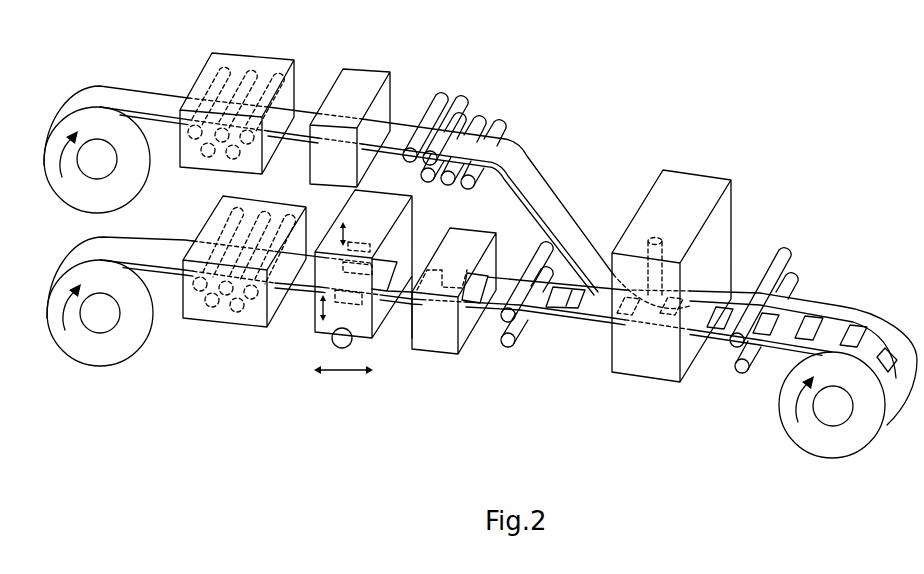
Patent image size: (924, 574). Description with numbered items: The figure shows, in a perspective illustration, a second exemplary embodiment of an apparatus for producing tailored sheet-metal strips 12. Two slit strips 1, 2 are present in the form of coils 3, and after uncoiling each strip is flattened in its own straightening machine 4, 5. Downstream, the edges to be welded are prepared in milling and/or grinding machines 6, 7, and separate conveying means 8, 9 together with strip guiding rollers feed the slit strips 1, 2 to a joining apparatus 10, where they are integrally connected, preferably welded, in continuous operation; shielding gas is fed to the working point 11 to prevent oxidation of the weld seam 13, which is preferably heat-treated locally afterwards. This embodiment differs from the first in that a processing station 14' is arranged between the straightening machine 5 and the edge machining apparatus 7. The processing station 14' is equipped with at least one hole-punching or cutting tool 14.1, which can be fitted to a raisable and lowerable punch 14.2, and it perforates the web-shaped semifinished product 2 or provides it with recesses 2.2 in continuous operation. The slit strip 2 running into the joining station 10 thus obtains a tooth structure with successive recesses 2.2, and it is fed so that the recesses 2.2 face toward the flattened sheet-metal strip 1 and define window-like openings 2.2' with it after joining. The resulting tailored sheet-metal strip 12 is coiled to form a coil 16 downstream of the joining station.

The slit strip 1 is at (163, 97).
The slit strip 2 is at (172, 250).
The coil 3 is at (72, 195).
The straightening machine 4 is at (247, 66).
The straightening machine 5 is at (220, 313).
The milling and/or grinding machine 6 is at (362, 82).
The milling and/or grinding machine 7 is at (437, 340).
The conveying means 8 is at (483, 100).
The conveying means 9 is at (508, 357).
The joining apparatus 10 is at (677, 187).
The working point 11 is at (657, 298).
The tailored sheet-metal strip 12 is at (742, 292).
The weld seam 13 is at (809, 277).
The hole-punching or cutting tool 14.1 is at (373, 247).
The punch 14.2 is at (358, 237).
The processing station 14' is at (342, 307).
The recess 2.2 is at (527, 304).
The window-like opening 2.2' is at (795, 293).
The coil 16 is at (828, 443).